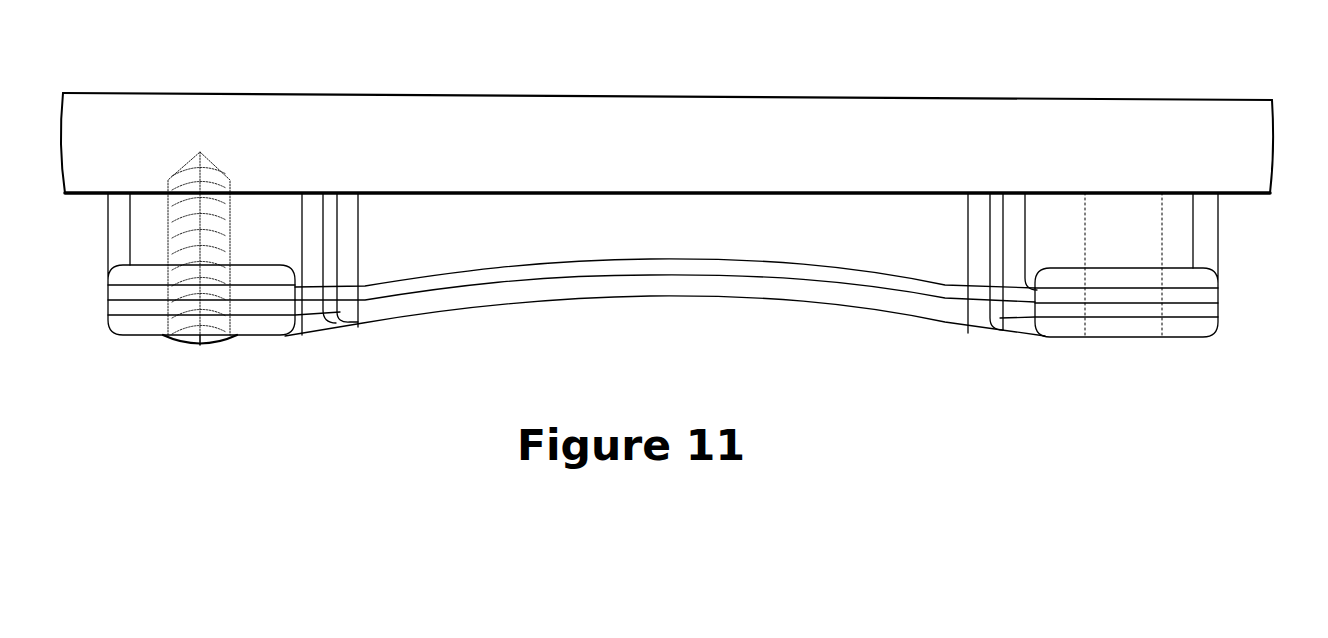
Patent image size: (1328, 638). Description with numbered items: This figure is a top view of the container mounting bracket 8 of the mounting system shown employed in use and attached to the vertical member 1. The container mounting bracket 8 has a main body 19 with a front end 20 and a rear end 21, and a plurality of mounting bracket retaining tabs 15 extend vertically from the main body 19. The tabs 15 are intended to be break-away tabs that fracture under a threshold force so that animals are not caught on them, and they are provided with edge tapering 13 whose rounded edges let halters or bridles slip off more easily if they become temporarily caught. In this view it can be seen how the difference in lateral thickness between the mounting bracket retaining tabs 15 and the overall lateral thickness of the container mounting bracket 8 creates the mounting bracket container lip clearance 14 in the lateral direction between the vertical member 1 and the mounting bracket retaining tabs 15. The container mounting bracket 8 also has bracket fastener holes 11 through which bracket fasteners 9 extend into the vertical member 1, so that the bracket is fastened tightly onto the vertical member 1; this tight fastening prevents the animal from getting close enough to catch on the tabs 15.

The vertical member 1 is at (1035, 120).
The container mounting bracket 8 is at (665, 298).
The bracket fasteners 9 is at (183, 348).
The bracket fastener holes 11 is at (1140, 332).
The edge tapering 13 is at (113, 298).
The mounting bracket container lip clearance 14 is at (1133, 200).
The mounting bracket retaining tabs 15 is at (1127, 282).
The main body 19 is at (580, 297).
The front end 20 is at (725, 242).
The rear end 21 is at (583, 190).